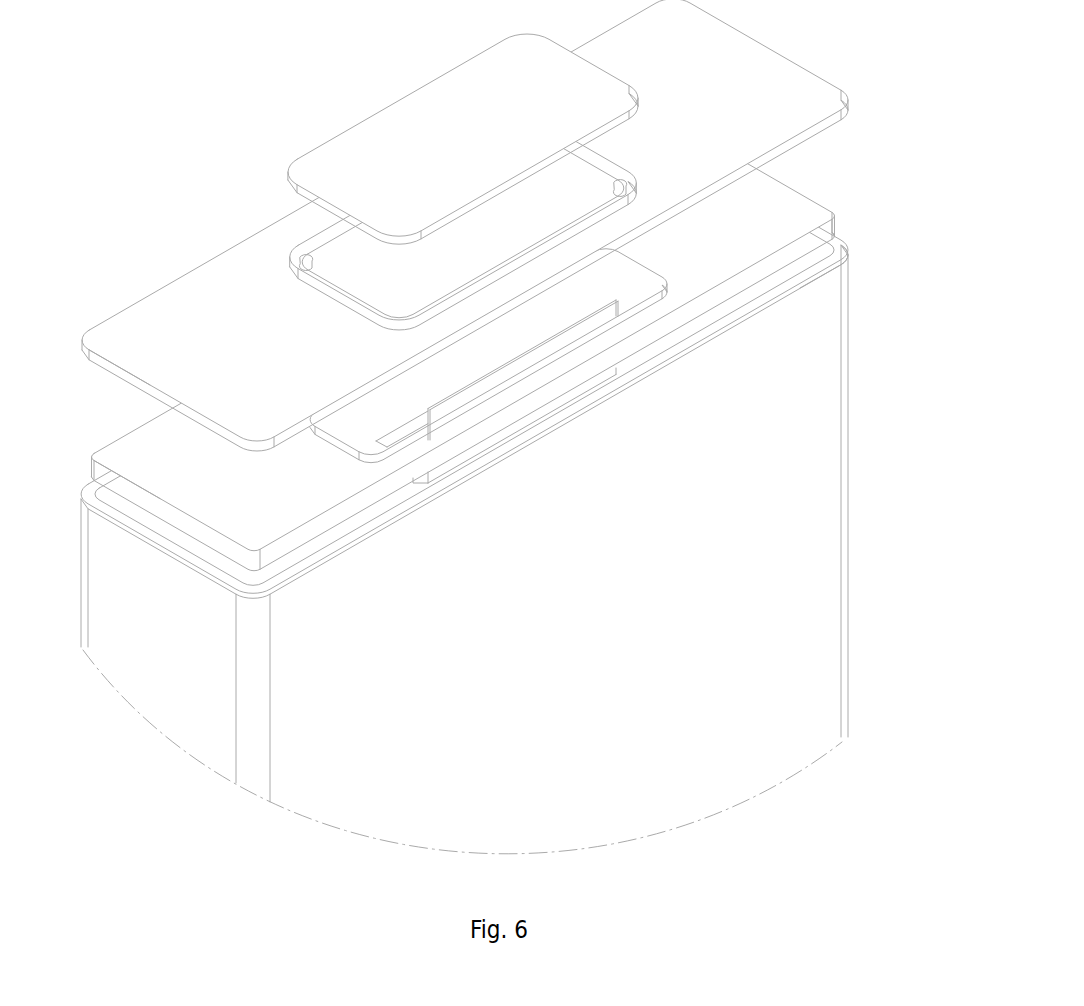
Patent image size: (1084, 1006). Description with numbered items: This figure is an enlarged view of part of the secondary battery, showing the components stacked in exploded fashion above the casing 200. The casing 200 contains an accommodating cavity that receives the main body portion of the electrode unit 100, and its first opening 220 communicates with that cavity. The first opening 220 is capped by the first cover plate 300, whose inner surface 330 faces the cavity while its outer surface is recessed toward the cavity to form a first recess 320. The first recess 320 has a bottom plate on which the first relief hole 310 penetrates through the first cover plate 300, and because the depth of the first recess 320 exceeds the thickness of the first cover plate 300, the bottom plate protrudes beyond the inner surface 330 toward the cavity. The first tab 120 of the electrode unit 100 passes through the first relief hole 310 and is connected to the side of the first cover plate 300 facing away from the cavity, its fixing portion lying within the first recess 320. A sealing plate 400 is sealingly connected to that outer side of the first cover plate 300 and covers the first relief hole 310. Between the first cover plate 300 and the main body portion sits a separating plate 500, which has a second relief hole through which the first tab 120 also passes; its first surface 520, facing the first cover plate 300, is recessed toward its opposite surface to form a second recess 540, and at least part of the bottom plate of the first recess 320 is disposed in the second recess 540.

The electrode unit 100 is at (305, 558).
The first tab 120 is at (540, 365).
The casing 200 is at (822, 540).
The first opening 220 is at (830, 252).
The first cover plate 300 is at (215, 280).
The first relief hole 310 is at (329, 248).
The first recess 320 is at (567, 200).
The inner surface 330 is at (113, 370).
The sealing plate 400 is at (403, 130).
The separating plate 500 is at (790, 200).
The first surface 520 is at (145, 476).
The second recess 540 is at (632, 296).